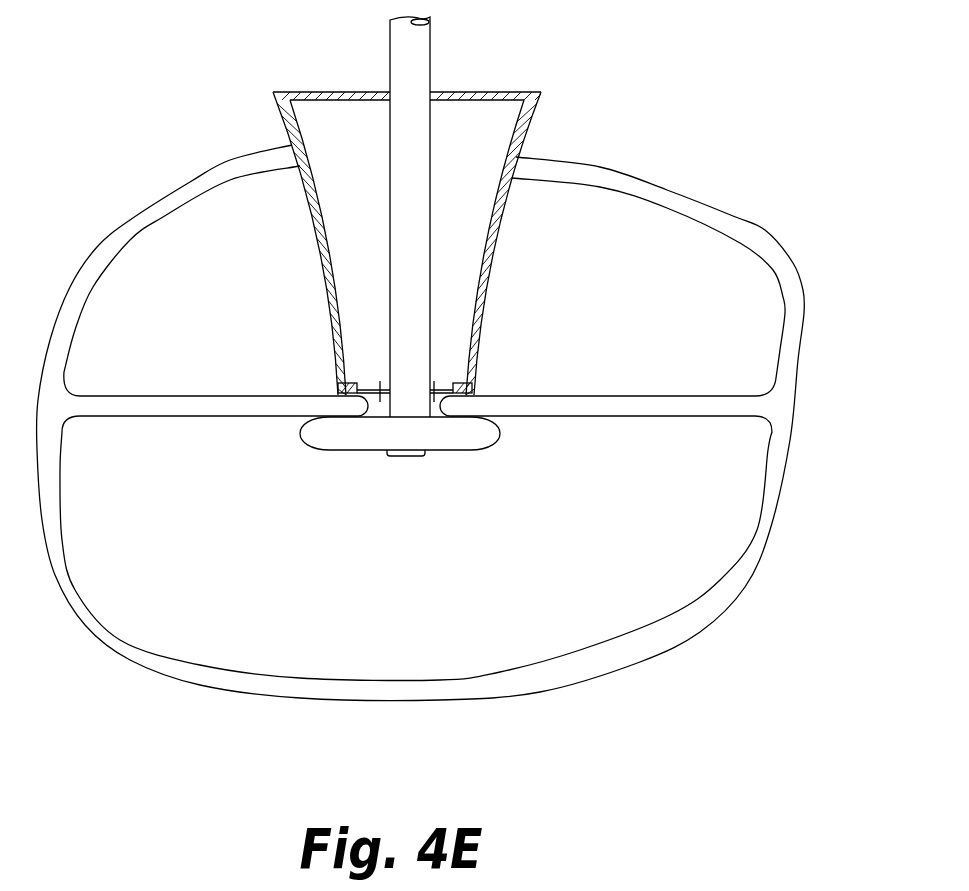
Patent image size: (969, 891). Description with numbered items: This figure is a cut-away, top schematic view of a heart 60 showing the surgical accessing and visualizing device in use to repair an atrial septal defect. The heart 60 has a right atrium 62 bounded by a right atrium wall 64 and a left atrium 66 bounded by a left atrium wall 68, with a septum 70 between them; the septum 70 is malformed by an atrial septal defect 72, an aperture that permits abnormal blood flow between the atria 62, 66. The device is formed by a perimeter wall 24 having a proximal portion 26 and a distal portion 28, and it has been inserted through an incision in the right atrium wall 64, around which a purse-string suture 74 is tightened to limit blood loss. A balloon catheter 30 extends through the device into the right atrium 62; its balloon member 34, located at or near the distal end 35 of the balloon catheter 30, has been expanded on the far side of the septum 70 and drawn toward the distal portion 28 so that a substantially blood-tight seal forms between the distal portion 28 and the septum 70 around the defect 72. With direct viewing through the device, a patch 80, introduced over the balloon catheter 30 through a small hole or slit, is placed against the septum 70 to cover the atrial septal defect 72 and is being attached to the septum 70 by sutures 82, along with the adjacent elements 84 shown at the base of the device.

The perimeter wall 24 is at (500, 240).
The proximal portion 26 is at (530, 115).
The distal portion 28 is at (470, 388).
The balloon catheter 30 is at (418, 57).
The balloon member 34 is at (487, 437).
The distal end 35 is at (405, 458).
The heart 60 is at (455, 392).
The right atrium 62 is at (167, 258).
The right atrium wall 64 is at (192, 190).
The left atrium 66 is at (662, 563).
The left atrium wall 68 is at (757, 532).
The septum 70 is at (622, 415).
The atrial septal defect 72 is at (357, 448).
The purse-string suture 74 is at (293, 150).
The patch 80 is at (346, 383).
The sutures 82 is at (343, 388).
The retaining pin 84 is at (379, 382).